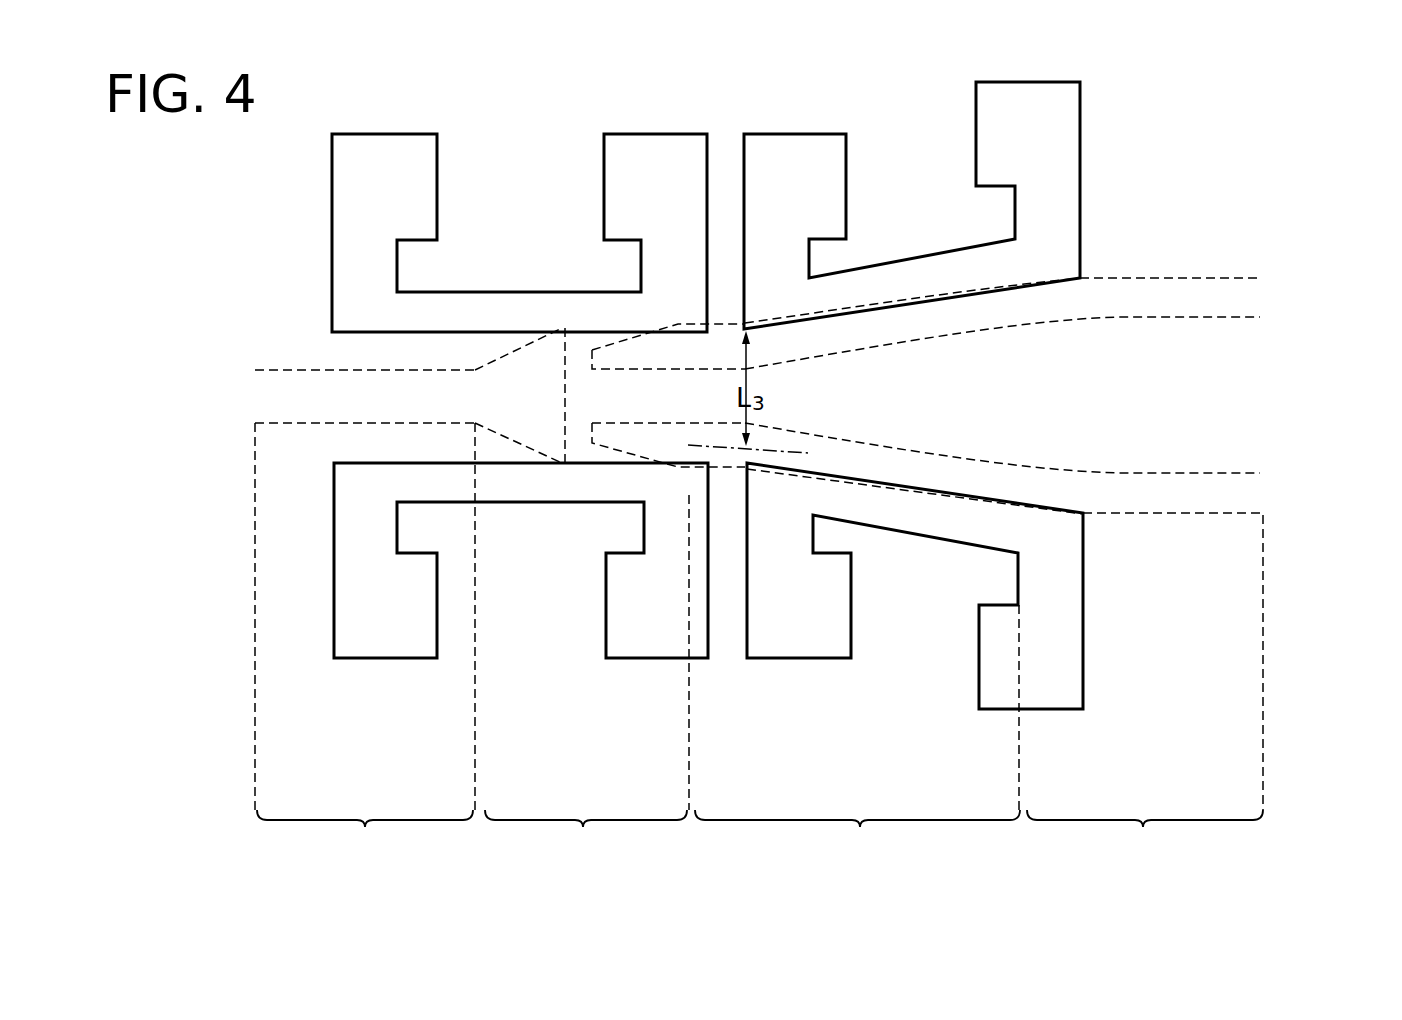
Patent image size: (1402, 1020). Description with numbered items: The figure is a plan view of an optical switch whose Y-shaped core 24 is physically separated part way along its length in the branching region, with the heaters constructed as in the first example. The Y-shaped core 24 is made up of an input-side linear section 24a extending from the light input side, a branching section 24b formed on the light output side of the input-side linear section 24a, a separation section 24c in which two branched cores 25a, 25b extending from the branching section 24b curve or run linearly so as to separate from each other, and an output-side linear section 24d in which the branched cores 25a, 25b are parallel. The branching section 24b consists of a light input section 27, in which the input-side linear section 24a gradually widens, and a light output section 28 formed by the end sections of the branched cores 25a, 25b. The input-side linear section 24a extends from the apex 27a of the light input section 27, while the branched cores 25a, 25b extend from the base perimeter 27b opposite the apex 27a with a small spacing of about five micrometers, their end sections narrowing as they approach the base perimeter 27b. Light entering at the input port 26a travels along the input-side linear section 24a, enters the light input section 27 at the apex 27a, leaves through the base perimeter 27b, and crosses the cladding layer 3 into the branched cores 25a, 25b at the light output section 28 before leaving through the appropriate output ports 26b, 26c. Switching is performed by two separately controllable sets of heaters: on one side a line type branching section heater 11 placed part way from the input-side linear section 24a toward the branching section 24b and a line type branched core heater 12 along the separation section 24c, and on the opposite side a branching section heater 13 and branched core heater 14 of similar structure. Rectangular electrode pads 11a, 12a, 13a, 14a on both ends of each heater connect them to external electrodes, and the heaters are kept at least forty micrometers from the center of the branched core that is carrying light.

The cladding layer 3 is at (1226, 154).
The branching section heater 11 is at (627, 136).
The electrode pads 11a is at (371, 152).
The branched core heater 12 is at (792, 136).
The electrode pads 12a is at (820, 173).
The branching section heater 13 is at (628, 660).
The electrode pads 13a is at (375, 640).
The branched core heater 14 is at (795, 658).
The electrode pads 14a is at (822, 618).
The Y-shaped core 24 is at (1178, 278).
The input-side linear section 24a is at (365, 839).
The branching section 24b is at (587, 681).
The separation section 24c is at (857, 737).
The output-side linear section 24d is at (1145, 839).
The branched core 25a is at (1232, 290).
The branched core 25b is at (1215, 508).
The input port 26a is at (285, 397).
The output port 26b is at (1240, 300).
The output port 26c is at (1240, 498).
The light input section 27 is at (520, 352).
The apex 27a is at (475, 397).
The base perimeter 27b is at (568, 398).
The light output section 28 is at (637, 337).